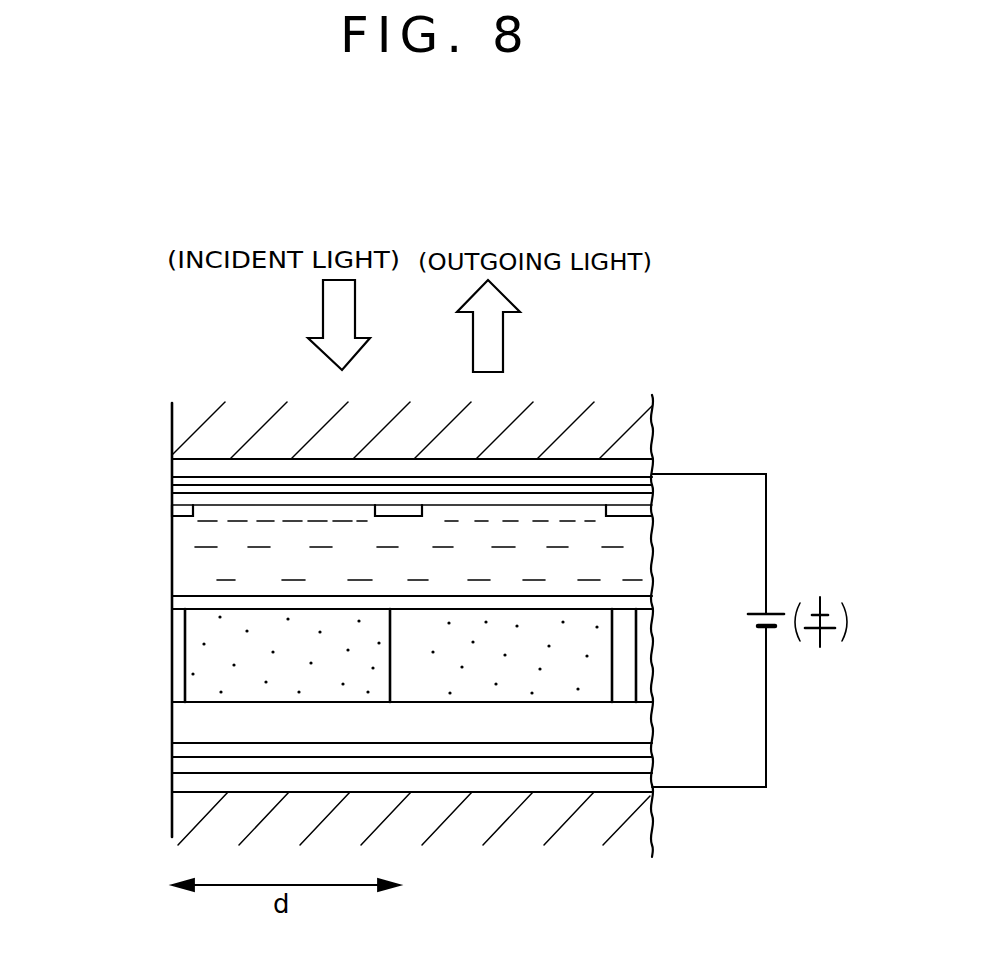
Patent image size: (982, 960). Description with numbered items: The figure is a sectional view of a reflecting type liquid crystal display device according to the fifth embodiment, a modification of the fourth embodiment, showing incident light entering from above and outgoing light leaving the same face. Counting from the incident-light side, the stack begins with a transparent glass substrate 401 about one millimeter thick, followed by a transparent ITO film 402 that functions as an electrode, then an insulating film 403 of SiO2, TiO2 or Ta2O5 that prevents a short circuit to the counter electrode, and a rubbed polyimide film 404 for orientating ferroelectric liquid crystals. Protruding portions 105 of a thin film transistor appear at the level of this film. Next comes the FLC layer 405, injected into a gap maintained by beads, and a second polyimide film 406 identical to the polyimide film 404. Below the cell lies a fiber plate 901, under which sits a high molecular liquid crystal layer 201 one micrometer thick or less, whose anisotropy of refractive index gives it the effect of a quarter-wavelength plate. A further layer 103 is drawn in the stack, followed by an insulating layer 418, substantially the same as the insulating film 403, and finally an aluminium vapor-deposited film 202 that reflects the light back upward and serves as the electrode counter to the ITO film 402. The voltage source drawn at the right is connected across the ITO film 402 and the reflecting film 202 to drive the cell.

The transparent glass substrate 401 is at (172, 427).
The transparent ITO film 402 is at (172, 468).
The insulating film 403 is at (172, 487).
The polyimide film 404 is at (172, 500).
The protruding portions of TFT 105 is at (396, 510).
The FLC layer 405 is at (178, 561).
The polyimide film 406 is at (172, 599).
The fiber plate 901 is at (172, 660).
The high molecular liquid crystal layer 201 is at (172, 720).
The reflective electrode layer 103 is at (172, 747).
The insulating layer 418 is at (172, 763).
The aluminium vapor-deposited film 202 is at (172, 785).